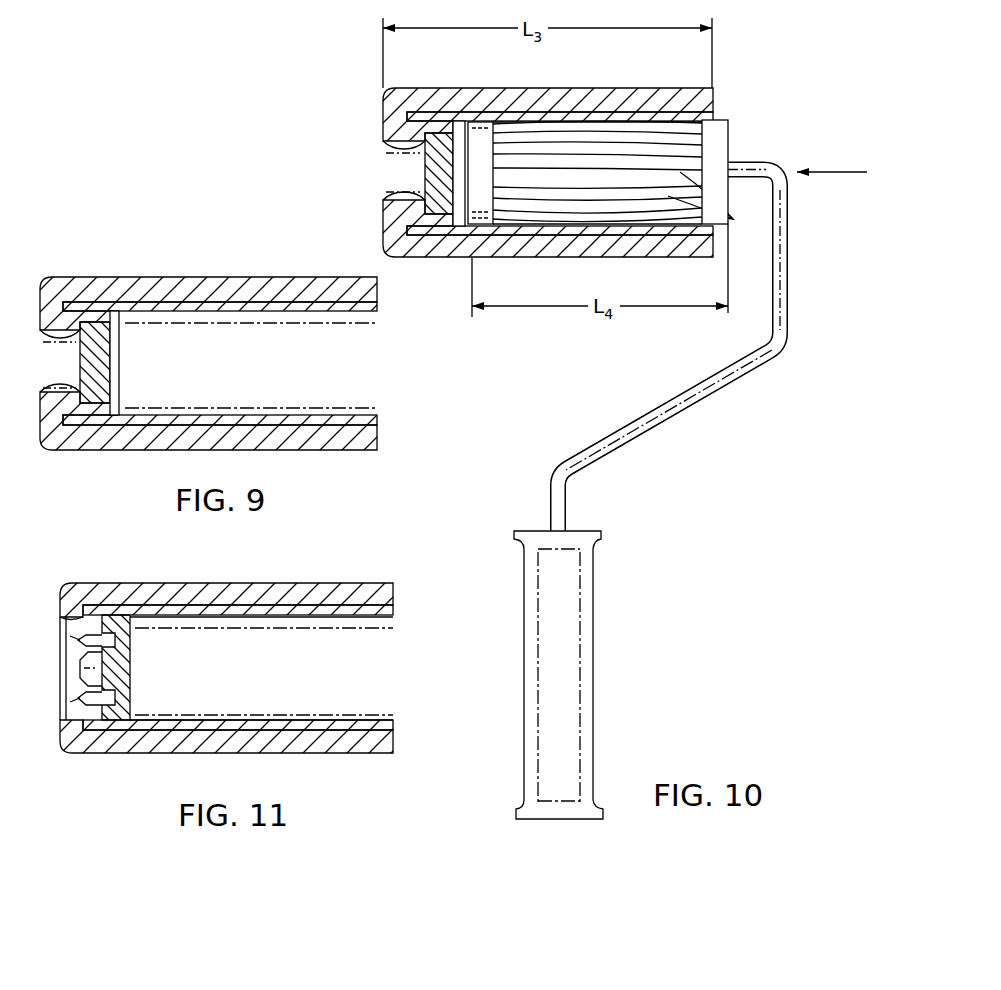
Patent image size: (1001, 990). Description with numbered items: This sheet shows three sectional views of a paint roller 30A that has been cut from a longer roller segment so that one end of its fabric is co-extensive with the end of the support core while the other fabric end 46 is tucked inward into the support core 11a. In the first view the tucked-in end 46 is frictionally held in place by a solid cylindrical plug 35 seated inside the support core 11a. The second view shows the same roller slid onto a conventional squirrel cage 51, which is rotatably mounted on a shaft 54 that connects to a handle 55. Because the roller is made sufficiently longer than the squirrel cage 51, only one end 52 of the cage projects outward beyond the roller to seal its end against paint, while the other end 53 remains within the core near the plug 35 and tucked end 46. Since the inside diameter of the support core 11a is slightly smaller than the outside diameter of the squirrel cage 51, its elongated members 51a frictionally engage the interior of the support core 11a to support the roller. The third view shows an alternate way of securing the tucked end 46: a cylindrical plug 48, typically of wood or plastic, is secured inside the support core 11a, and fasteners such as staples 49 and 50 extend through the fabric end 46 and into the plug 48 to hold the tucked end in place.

In FIG. 9, the paint roller 30A is at (203, 284).
In FIG. 11, the paint roller 30A is at (302, 583).
In FIG. 9, the support core 11a is at (223, 306).
In FIG. 11, the support core 11a is at (367, 610).
In FIG. 10, the support core 11a is at (678, 114).
In FIG. 9, the cylindrical plug 35 is at (102, 368).
In FIG. 10, the cylindrical plug 35 is at (427, 165).
In FIG. 9, the tucked end 46 is at (118, 327).
In FIG. 11, the tucked end 46 is at (68, 622).
In FIG. 10, the tucked end 46 is at (458, 125).
In FIG. 11, the cylindrical plug 48 is at (115, 620).
In FIG. 11, the staple 49 is at (83, 641).
In FIG. 11, the staple 50 is at (78, 704).
In FIG. 10, the squirrel cage 51 is at (602, 140).
In FIG. 10, the elongated members 51a is at (718, 209).
In FIG. 10, the end of squirrel cage 52 is at (723, 143).
In FIG. 10, the end of squirrel cage 53 is at (482, 135).
In FIG. 10, the shaft 54 is at (760, 162).
In FIG. 10, the handle 55 is at (538, 648).